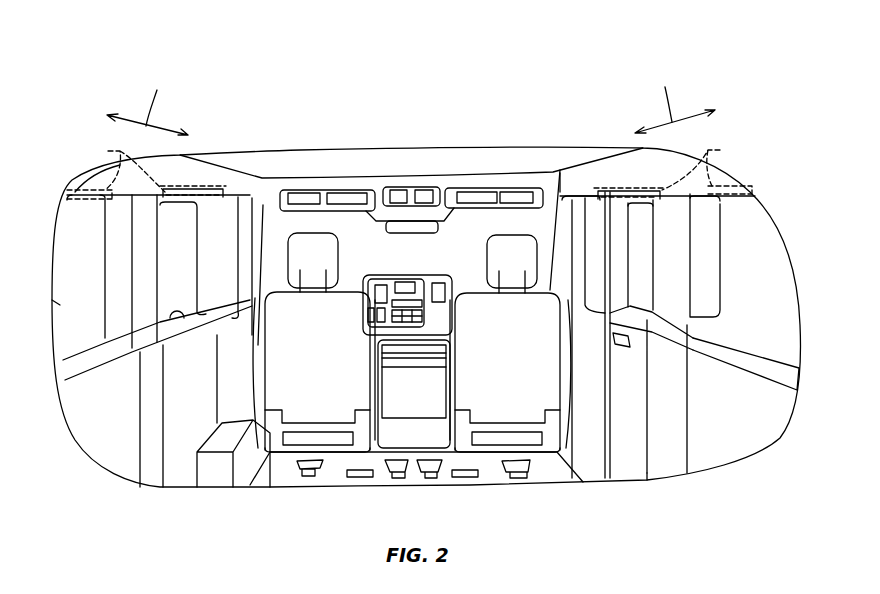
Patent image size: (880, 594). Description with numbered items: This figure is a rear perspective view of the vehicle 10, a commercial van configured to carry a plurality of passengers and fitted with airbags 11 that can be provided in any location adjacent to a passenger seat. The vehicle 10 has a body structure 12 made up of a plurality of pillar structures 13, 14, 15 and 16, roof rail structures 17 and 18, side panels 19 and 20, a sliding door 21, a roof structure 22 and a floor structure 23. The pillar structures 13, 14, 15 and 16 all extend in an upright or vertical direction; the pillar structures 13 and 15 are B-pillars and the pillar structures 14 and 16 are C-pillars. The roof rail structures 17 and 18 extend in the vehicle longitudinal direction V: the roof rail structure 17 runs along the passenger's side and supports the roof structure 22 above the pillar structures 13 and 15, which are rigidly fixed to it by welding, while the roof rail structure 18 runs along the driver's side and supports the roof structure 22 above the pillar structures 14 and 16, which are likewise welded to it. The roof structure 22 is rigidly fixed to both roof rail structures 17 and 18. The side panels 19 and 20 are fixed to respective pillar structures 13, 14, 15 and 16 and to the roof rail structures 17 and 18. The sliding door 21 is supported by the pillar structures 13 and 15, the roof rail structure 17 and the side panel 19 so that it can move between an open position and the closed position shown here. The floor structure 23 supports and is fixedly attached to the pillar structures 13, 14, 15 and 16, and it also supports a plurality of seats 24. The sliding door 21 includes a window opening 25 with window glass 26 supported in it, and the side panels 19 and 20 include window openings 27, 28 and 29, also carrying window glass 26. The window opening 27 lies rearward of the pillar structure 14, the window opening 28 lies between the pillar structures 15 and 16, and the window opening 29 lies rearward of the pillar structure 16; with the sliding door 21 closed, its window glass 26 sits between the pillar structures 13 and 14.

The vehicle 10 is at (283, 50).
The airbags 11 is at (409, 170).
The body structure 12 is at (406, 143).
The pillar structure 13 is at (577, 238).
The pillar structure 14 is at (668, 368).
The pillar structure 15 is at (248, 240).
The pillar structure 16 is at (148, 247).
The roof rail structure 17 is at (613, 176).
The roof rail structure 18 is at (206, 172).
The side panel 19 is at (762, 433).
The side panel 20 is at (180, 476).
The sliding door 21 is at (627, 432).
The roof structure 22 is at (343, 165).
The floor structure 23 is at (274, 470).
The seats 24 is at (350, 300).
The window opening 25 is at (630, 236).
The window glass 26 is at (190, 232).
The window opening 27 is at (770, 355).
The window opening 28 is at (186, 318).
The window opening 29 is at (103, 313).
The vehicle longitudinal direction V is at (411, 99).